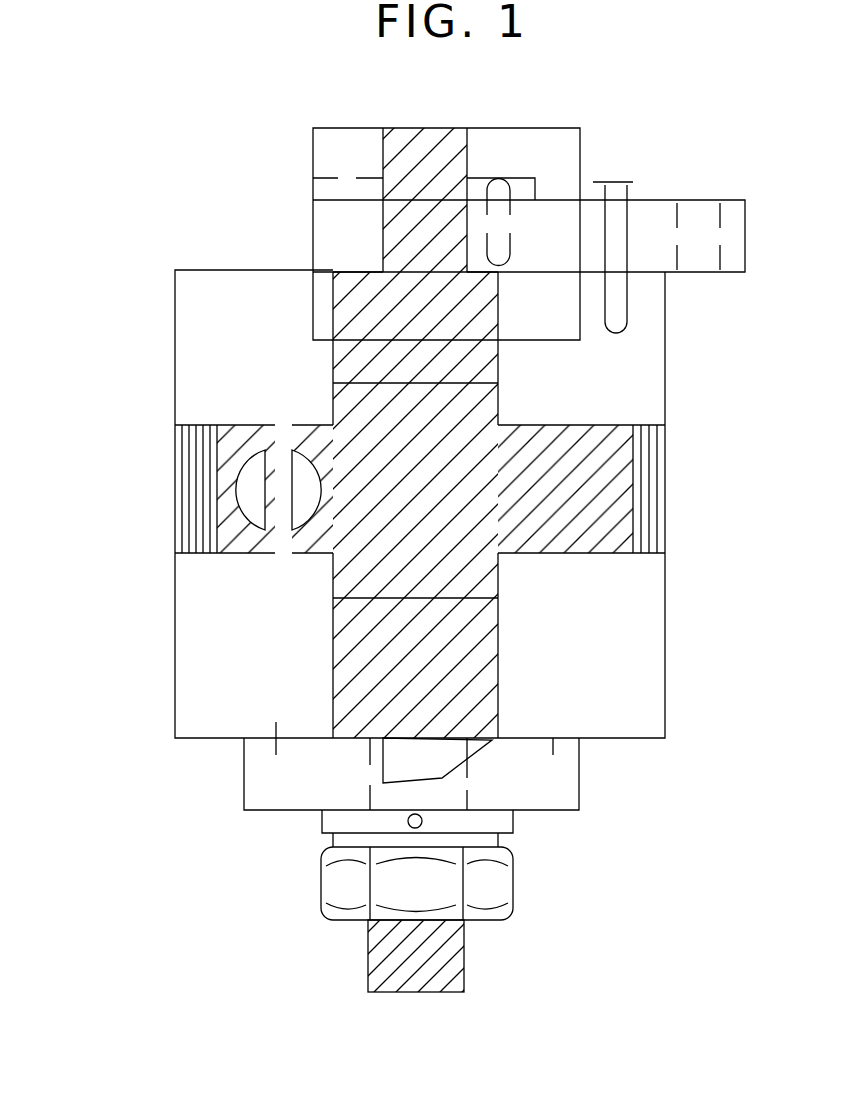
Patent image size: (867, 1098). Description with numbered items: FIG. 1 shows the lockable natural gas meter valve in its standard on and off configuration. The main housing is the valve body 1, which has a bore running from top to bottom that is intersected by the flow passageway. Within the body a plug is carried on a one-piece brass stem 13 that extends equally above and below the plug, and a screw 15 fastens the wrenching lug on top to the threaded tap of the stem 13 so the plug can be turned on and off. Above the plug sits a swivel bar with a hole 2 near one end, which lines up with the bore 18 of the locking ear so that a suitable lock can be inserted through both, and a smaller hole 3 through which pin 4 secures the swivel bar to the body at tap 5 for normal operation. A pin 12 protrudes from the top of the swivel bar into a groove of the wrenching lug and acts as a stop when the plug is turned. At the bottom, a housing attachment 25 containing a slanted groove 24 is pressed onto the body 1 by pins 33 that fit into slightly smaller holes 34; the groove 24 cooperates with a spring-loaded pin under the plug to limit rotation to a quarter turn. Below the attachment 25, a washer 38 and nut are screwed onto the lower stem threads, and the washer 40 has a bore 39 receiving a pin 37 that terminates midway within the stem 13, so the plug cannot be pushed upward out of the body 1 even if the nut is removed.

The valve body 1 is at (201, 671).
The hole 2 is at (742, 237).
The hole 3 is at (639, 221).
The pin 4 is at (626, 163).
The tap 5 is at (665, 308).
The pin 12 is at (522, 169).
The stem 13 is at (361, 243).
The screw 15 is at (332, 156).
The bore 18 is at (381, 307).
The slanted groove 24 is at (358, 764).
The housing attachment 25 is at (565, 782).
The pins 33 is at (251, 724).
The holes 34 is at (577, 746).
The pin 37 is at (520, 383).
The washer 38 is at (305, 598).
The bore 39 is at (381, 821).
The washer 40 is at (535, 826).